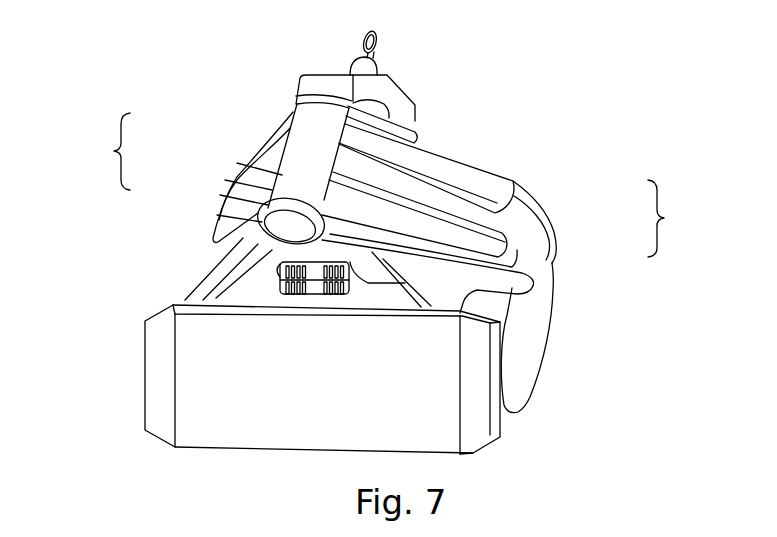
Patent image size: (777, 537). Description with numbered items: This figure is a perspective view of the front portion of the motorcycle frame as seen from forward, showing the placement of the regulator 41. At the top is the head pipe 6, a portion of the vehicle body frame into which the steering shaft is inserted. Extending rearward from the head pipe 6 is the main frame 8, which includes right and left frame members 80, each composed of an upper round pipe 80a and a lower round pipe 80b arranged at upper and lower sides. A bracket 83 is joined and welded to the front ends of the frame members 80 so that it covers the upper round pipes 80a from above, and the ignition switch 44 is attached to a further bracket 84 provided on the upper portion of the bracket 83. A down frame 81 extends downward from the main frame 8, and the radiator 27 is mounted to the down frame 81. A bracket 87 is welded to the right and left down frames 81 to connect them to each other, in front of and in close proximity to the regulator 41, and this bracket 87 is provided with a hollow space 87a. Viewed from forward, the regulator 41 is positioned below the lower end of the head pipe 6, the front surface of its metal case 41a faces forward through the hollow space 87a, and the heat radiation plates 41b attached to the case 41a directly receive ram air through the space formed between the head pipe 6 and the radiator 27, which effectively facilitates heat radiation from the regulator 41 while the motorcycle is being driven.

The head pipe 6 is at (302, 140).
The main frame 8 is at (516, 172).
The radiator 27 is at (157, 372).
The regulator 41 is at (331, 298).
The case 41a is at (313, 293).
The heat radiation plates 41b is at (284, 293).
The ignition switch 44 is at (377, 57).
The frame members 80 is at (392, 185).
The upper round pipe 80a is at (539, 203).
The lower round pipe 80b is at (552, 259).
The down frame 81 is at (453, 282).
The bracket 83 is at (418, 137).
The bracket 84 is at (400, 98).
The bracket 87 is at (278, 287).
The hollow space 87a is at (277, 263).